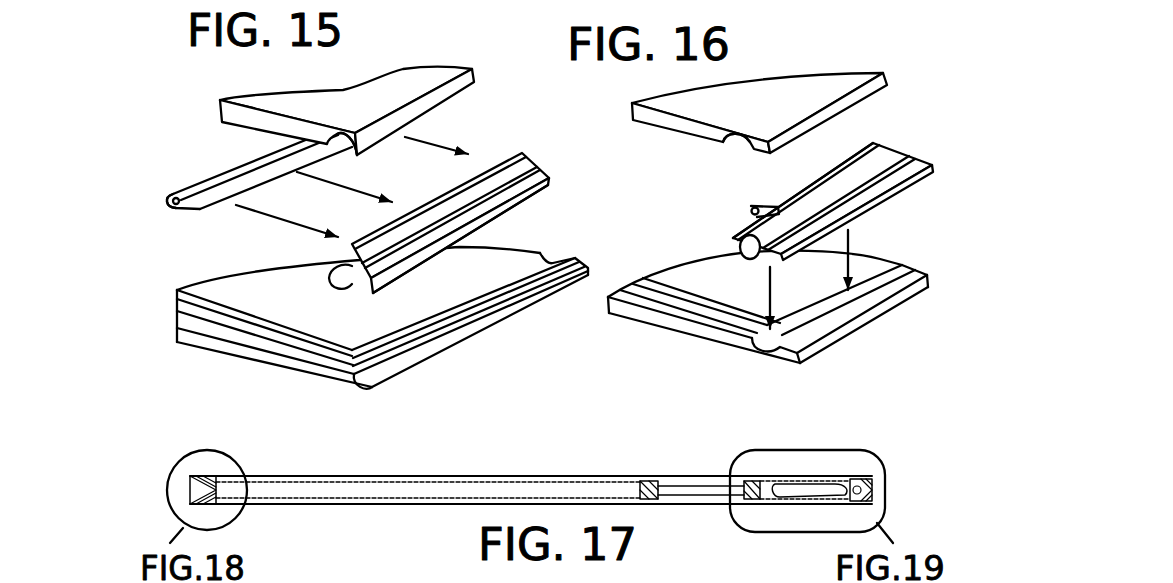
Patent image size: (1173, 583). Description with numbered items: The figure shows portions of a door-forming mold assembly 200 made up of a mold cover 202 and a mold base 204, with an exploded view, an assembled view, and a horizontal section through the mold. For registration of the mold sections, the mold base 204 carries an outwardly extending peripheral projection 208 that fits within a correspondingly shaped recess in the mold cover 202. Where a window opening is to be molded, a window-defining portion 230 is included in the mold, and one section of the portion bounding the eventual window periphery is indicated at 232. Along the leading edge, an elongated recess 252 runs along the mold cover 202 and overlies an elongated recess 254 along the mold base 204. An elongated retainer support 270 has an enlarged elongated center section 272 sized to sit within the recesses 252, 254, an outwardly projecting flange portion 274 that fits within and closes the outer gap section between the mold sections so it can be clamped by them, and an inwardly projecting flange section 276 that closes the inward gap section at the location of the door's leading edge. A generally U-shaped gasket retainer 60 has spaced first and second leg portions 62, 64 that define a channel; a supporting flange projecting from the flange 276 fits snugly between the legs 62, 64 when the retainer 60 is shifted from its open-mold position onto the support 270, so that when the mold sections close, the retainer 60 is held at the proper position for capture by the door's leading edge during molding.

In FIG. 15, the mold assembly 200 is at (168, 334).
In FIG. 16, the mold assembly 200 is at (859, 341).
In FIG. 17, the mold assembly 200 is at (559, 449).
In FIG. 15, the mold cover 202 is at (275, 100).
In FIG. 16, the mold cover 202 is at (806, 86).
In FIG. 17, the mold cover 202 is at (447, 476).
In FIG. 15, the mold base 204 is at (219, 352).
In FIG. 16, the mold base 204 is at (714, 343).
In FIG. 17, the mold base 204 is at (447, 504).
In FIG. 15, the peripheral projection 208 is at (226, 311).
In FIG. 16, the peripheral projection 208 is at (688, 304).
In FIG. 17, the window-defining portion 230 is at (699, 518).
In FIG. 17, the window periphery defining portion 232 is at (652, 474).
In FIG. 15, the elongated recess 252 is at (336, 136).
In FIG. 16, the elongated recess 252 is at (738, 137).
In FIG. 15, the elongated recess 254 is at (352, 389).
In FIG. 16, the elongated recess 254 is at (887, 276).
In FIG. 15, the retainer support 270 is at (535, 157).
In FIG. 16, the retainer support 270 is at (948, 142).
In FIG. 15, the center section 272 is at (331, 275).
In FIG. 16, the center section 272 is at (904, 148).
In FIG. 15, the outwardly projecting flange portion 274 is at (455, 228).
In FIG. 16, the outwardly projecting flange portion 274 is at (865, 200).
In FIG. 15, the inwardly projecting flange section 276 is at (330, 272).
In FIG. 16, the inwardly projecting flange section 276 is at (740, 243).
In FIG. 15, the gasket retainer 60 is at (168, 204).
In FIG. 16, the gasket retainer 60 is at (748, 205).
In FIG. 15, the first leg portion 62 is at (224, 178).
In FIG. 15, the second leg portion 64 is at (191, 213).